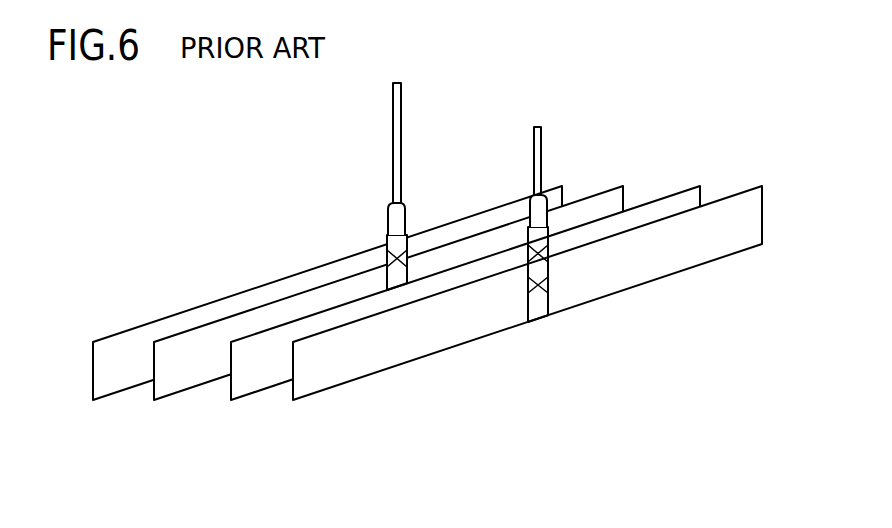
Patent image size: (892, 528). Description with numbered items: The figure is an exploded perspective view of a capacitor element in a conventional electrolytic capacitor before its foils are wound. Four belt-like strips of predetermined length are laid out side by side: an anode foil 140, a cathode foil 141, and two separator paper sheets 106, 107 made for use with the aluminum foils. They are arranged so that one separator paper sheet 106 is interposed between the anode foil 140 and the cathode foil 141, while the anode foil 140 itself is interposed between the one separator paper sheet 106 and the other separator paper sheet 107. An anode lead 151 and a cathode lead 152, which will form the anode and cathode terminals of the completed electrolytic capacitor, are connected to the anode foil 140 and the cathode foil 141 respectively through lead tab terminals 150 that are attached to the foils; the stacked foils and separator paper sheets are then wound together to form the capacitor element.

The separator paper sheet 106 is at (255, 365).
The separator paper sheet 107 is at (120, 365).
The anode foil 140 is at (186, 365).
The cathode foil 141 is at (453, 317).
The lead tab terminal 150 is at (397, 242).
The anode lead 151 is at (390, 114).
The cathode lead 152 is at (543, 158).